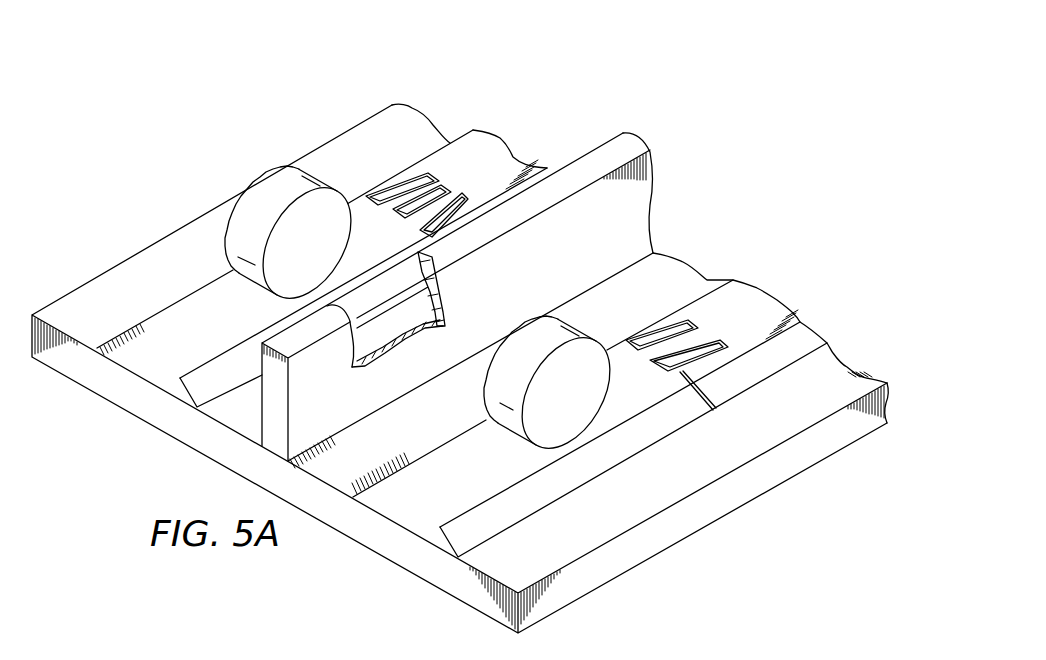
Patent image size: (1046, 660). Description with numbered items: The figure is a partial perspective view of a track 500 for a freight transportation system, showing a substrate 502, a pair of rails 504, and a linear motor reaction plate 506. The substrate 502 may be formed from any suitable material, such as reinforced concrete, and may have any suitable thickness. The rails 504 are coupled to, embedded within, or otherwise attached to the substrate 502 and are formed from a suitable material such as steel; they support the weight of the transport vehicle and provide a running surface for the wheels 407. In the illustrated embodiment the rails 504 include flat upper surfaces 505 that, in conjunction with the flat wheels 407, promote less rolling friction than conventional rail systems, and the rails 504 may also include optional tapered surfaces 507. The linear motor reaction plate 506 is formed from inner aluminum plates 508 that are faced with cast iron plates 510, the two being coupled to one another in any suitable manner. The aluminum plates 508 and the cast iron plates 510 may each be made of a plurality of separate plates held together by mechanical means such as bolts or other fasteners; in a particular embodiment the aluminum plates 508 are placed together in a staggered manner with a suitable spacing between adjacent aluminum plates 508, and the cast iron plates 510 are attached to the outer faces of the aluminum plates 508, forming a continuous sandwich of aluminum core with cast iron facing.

The track 500 is at (219, 128).
The substrate 502 is at (703, 517).
The rails 504 is at (485, 153).
The flat upper surfaces 505 is at (190, 304).
The linear motor reaction plate 506 is at (674, 149).
The tapered surfaces 507 is at (222, 376).
The aluminum plates 508 is at (355, 358).
The cast iron plates 510 is at (605, 152).
The wheels 407 is at (281, 175).